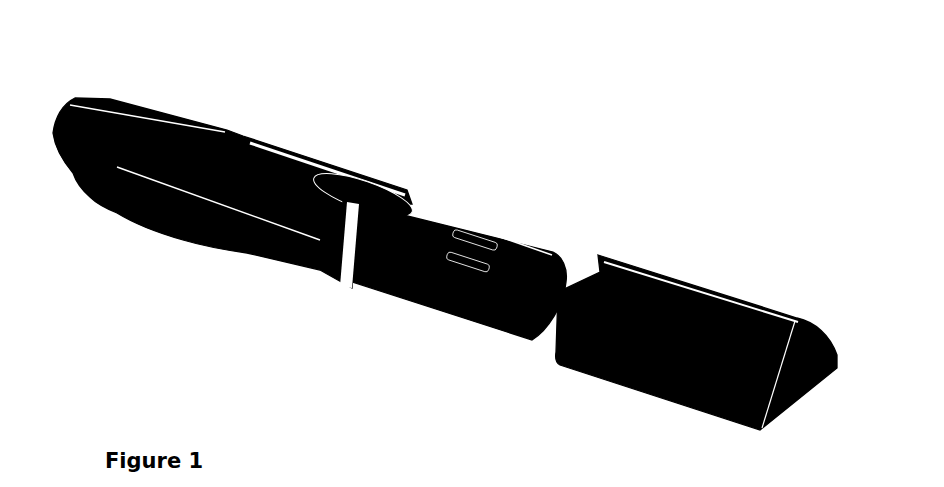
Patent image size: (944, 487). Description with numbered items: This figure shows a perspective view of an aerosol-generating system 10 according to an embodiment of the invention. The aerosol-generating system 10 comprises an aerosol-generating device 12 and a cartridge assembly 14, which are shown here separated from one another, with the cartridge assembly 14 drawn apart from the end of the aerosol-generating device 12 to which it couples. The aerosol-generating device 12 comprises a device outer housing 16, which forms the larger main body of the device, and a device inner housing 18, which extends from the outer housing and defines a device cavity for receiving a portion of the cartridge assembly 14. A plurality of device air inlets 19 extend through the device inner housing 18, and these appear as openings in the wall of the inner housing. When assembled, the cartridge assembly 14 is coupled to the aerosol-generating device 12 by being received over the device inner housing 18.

The aerosol-generating system 10 is at (445, 227).
The aerosol-generating device 12 is at (162, 102).
The cartridge assembly 14 is at (770, 300).
The device outer housing 16 is at (197, 213).
The device inner housing 18 is at (443, 222).
The device air inlets 19 is at (467, 272).